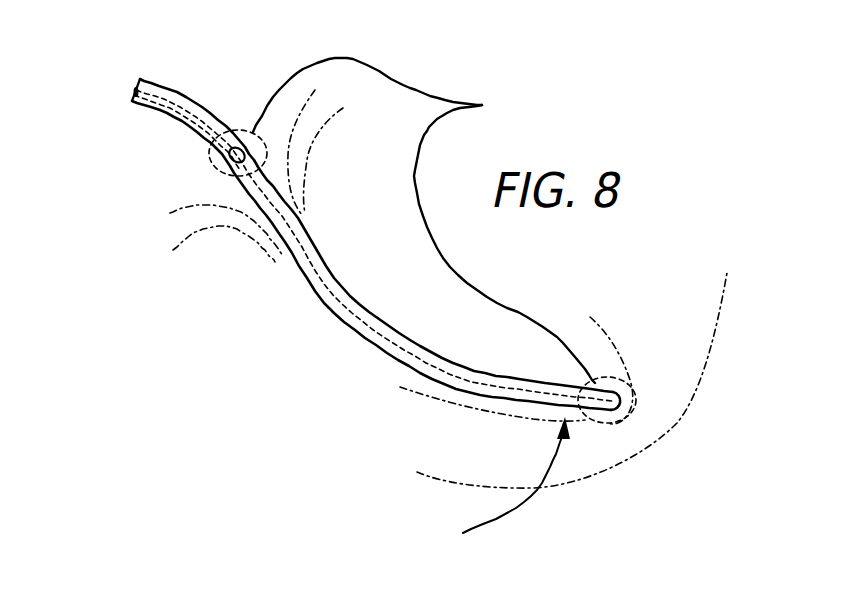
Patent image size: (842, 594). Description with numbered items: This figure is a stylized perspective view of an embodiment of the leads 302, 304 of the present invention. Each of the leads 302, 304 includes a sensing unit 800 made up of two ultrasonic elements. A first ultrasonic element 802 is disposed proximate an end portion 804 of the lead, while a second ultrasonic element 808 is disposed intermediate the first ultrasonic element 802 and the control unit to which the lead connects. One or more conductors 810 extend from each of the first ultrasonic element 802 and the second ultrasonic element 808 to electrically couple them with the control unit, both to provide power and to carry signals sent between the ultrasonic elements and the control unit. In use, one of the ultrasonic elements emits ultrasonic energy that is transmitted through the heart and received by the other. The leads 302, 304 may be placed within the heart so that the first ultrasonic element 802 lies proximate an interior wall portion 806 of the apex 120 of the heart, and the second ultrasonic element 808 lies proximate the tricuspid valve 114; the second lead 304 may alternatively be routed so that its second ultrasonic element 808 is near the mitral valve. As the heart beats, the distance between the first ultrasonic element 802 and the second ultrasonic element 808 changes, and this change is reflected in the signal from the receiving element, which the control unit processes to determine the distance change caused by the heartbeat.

The sensing unit 800 is at (482, 105).
The first ultrasonic element 802 is at (582, 468).
The end portion 804 is at (493, 479).
The interior wall portion 806 is at (440, 403).
The second ultrasonic element 808 is at (236, 151).
The conductors 810 is at (148, 87).
The lead 302 is at (193, 126).
The second lead 304 is at (186, 156).
The tricuspid valve 114 is at (232, 221).
The apex 120 is at (647, 410).